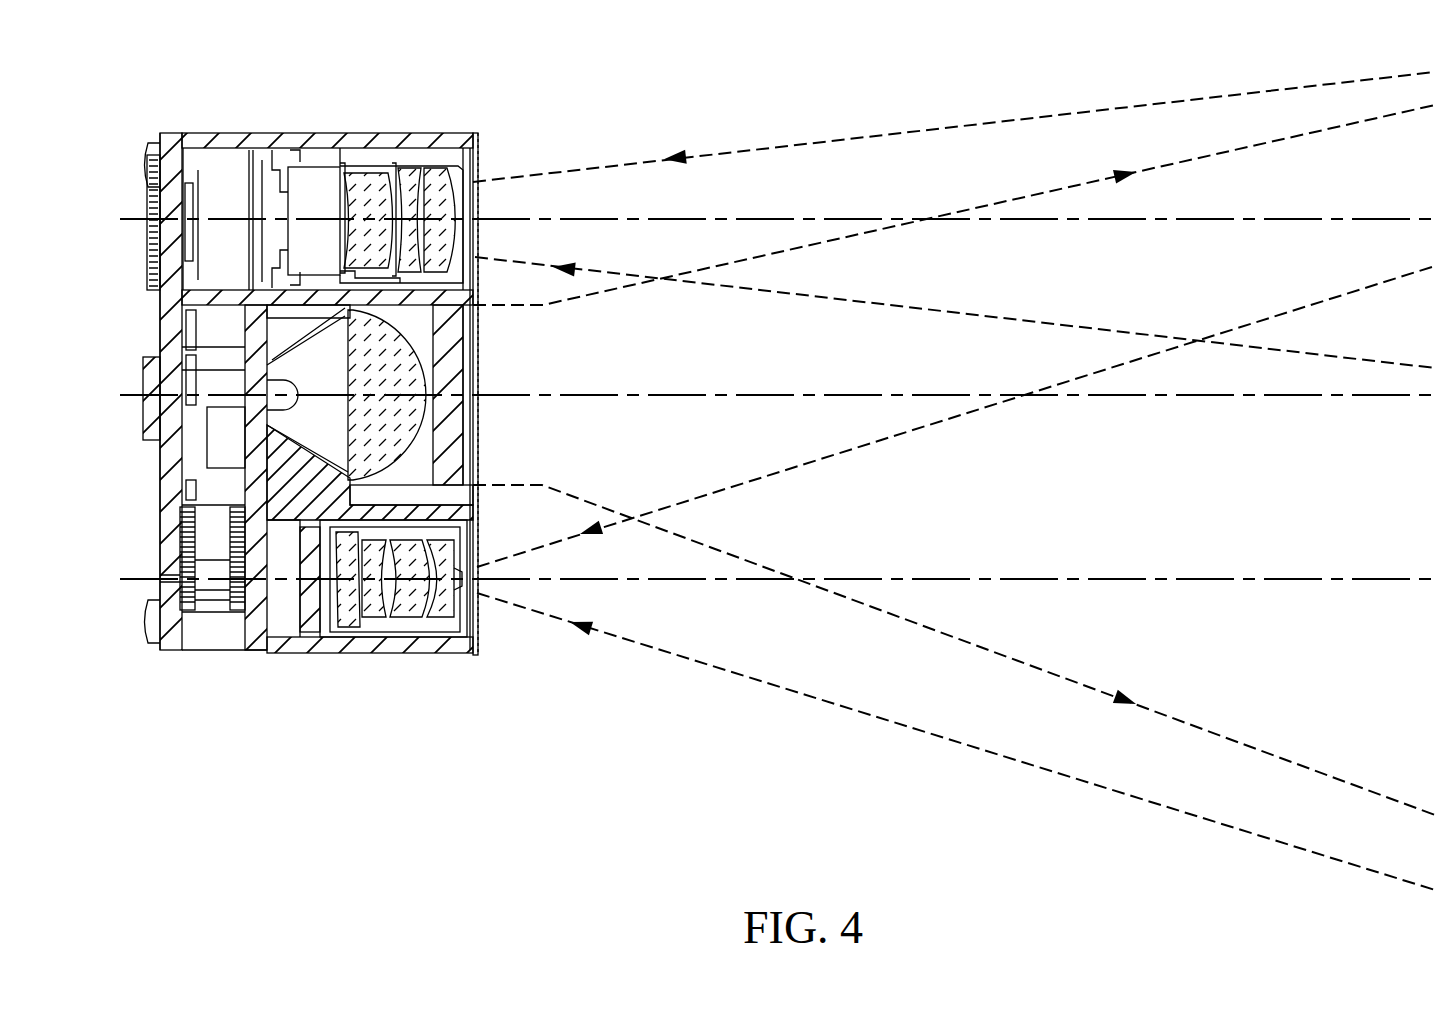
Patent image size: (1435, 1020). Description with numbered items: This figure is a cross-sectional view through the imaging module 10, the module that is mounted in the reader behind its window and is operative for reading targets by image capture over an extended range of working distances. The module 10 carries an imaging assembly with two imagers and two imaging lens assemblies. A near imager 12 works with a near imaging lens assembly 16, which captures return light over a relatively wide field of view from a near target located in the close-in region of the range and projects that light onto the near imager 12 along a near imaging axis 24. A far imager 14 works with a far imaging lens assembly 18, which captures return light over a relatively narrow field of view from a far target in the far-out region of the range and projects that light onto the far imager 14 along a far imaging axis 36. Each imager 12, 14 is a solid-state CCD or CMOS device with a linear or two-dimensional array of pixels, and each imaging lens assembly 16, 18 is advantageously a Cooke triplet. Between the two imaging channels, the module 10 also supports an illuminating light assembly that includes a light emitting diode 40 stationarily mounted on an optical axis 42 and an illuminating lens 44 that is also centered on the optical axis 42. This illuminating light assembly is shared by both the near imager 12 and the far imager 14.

The imaging module 10 is at (172, 97).
The near imager 12 is at (246, 630).
The far imager 14 is at (200, 170).
The near imaging lens assembly 16 is at (340, 625).
The far imaging lens assembly 18 is at (357, 167).
The near imaging axis 24 is at (847, 579).
The far imaging axis 36 is at (752, 219).
The light emitting diode 40 is at (283, 392).
The optical axis 42 is at (752, 395).
The illuminating lens 44 is at (420, 405).